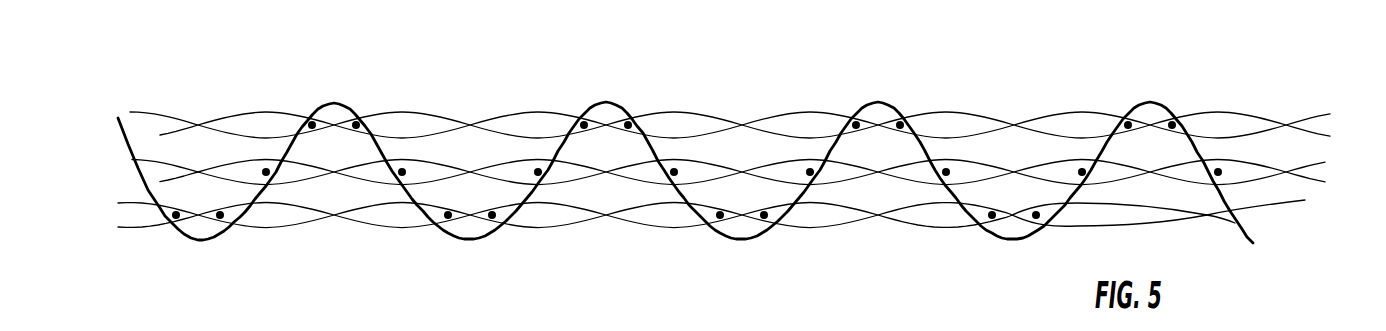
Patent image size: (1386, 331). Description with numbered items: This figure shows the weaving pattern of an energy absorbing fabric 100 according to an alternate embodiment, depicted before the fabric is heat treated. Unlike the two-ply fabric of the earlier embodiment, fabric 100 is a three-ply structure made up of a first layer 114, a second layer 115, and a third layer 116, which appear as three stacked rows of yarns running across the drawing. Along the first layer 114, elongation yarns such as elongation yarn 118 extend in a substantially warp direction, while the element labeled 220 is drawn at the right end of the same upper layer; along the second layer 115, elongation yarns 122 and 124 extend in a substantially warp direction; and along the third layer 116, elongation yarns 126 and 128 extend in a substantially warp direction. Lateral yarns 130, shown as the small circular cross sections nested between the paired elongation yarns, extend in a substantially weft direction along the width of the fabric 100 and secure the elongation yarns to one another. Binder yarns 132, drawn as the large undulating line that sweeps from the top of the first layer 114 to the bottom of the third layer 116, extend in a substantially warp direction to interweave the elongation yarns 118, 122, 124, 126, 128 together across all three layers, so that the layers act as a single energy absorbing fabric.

The fabric 100 is at (504, 80).
The first layer 114 is at (1344, 116).
The second layer 115 is at (1340, 170).
The third layer 116 is at (1322, 212).
The elongation yarn 118 is at (1240, 116).
The second yarn 220 is at (1320, 118).
The elongation yarn 122 is at (1243, 160).
The elongation yarn 124 is at (1320, 166).
The elongation yarn 126 is at (1218, 218).
The elongation yarn 128 is at (1268, 203).
The lateral yarns 130 is at (677, 167).
The binder yarns 132 is at (336, 102).